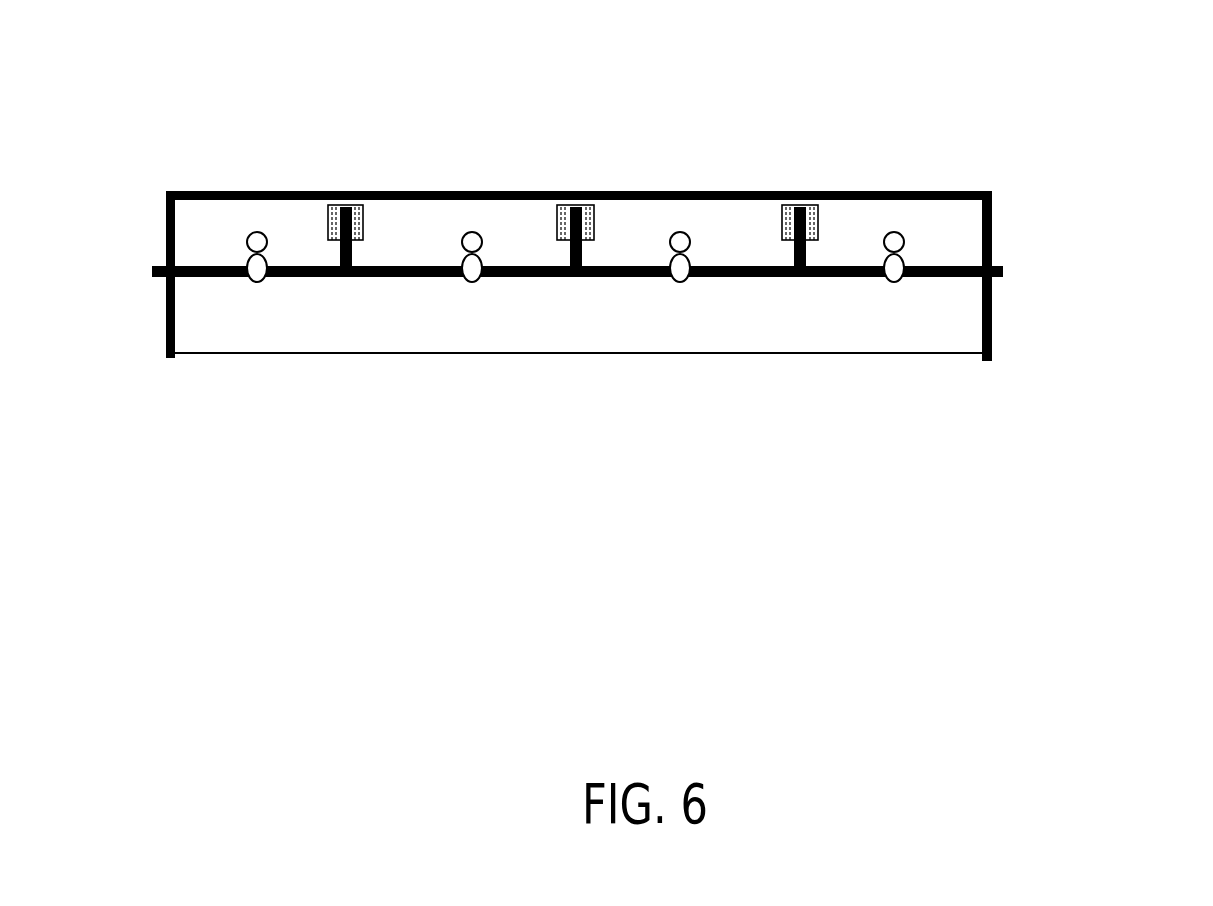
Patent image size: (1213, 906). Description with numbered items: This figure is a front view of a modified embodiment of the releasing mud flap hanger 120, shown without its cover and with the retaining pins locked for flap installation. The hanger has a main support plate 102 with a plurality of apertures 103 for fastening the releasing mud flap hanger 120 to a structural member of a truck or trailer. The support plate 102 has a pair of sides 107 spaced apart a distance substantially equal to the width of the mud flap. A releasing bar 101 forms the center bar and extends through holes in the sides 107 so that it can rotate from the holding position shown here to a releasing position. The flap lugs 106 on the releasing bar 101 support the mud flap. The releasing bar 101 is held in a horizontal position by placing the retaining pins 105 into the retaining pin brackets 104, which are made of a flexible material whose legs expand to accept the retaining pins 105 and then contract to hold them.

The releasing bar 101 is at (200, 264).
The main support plate 102 is at (370, 330).
The apertures 103 is at (250, 233).
The retaining pin brackets 104 is at (327, 207).
The retaining pins 105 is at (353, 255).
The flap lugs 106 is at (908, 255).
The sides 107 is at (167, 360).
The releasing mud flap hanger 120 is at (1050, 242).